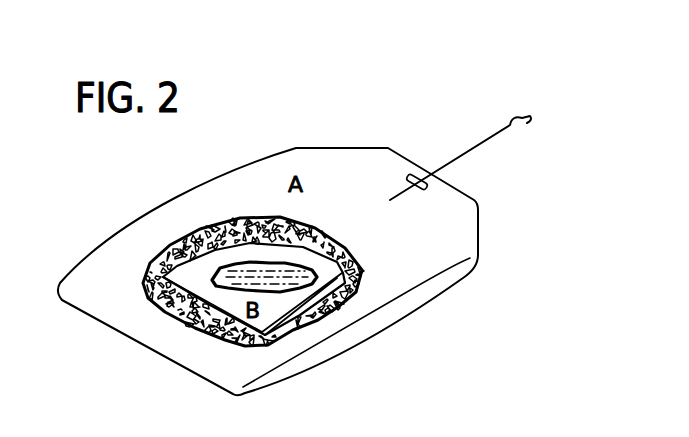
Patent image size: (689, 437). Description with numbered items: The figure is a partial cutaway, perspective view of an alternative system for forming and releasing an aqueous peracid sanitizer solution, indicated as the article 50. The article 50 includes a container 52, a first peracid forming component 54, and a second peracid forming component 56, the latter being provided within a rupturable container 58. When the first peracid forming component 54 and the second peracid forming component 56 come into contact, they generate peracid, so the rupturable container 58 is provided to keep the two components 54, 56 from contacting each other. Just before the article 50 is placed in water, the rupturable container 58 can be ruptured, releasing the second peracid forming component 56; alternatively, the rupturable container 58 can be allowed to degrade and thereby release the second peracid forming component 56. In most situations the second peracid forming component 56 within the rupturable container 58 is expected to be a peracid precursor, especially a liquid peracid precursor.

The article 50 is at (382, 127).
The container 52 is at (446, 199).
The first peracid forming component 54 is at (177, 240).
The second peracid forming component 56 is at (268, 272).
The rupturable container 58 is at (298, 307).